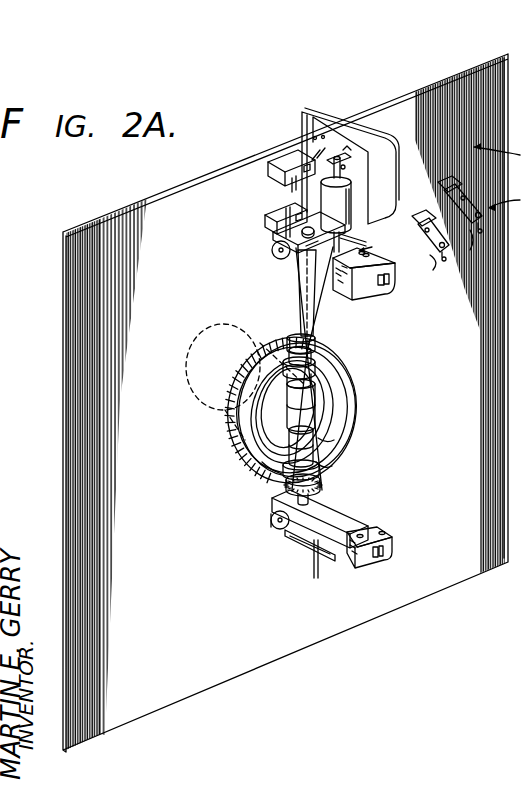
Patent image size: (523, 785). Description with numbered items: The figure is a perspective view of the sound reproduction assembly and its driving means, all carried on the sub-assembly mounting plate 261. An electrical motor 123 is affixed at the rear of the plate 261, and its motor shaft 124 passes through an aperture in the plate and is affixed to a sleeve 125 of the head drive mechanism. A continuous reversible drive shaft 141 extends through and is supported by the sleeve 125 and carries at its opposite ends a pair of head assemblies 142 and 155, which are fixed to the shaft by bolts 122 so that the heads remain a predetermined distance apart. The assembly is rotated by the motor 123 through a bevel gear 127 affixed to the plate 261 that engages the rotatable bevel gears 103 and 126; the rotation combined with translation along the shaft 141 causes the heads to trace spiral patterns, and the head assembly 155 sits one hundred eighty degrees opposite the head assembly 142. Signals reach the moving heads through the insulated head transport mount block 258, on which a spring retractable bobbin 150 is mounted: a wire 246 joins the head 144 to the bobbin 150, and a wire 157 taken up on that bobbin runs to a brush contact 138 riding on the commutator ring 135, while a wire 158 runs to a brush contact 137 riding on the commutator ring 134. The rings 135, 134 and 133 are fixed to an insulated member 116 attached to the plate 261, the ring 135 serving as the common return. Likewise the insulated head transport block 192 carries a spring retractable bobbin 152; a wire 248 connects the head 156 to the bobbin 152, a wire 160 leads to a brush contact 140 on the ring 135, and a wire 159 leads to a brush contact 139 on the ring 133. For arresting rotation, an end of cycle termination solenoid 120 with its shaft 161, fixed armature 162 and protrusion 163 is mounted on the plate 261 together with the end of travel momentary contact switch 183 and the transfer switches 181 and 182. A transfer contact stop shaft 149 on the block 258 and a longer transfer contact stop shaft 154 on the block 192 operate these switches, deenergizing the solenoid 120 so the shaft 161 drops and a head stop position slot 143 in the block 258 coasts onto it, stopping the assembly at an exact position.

The rotatable bevel gear 103 is at (323, 487).
The insulated member 116 is at (345, 367).
The end of cycle termination solenoid 120 is at (352, 197).
The bolts 122 is at (240, 257).
The electrical motor 123 is at (192, 380).
The motor shaft 124 is at (248, 400).
The sleeve 125 is at (270, 448).
The rotatable bevel gear 126 is at (317, 351).
The bevel gear 127 is at (277, 433).
The commutator ring 133 is at (288, 410).
The commutator ring 134 is at (252, 467).
The commutator ring 135 is at (342, 417).
The brush contact 137 is at (330, 393).
The brush contact 138 is at (335, 380).
The brush contact 139 is at (328, 443).
The brush contact 140 is at (285, 482).
The continuous reversible drive shaft 141 is at (312, 332).
The head assembly 142 is at (370, 250).
The head stop position slot 143 is at (312, 246).
The head 144 is at (395, 285).
The transfer contact stop shaft 149 is at (270, 216).
The spring retractable bobbin 150 is at (302, 259).
The spring retractable bobbin 152 is at (272, 520).
The transfer contact stop shaft 154 is at (293, 179).
The head assembly 155 is at (357, 511).
The head 156 is at (392, 543).
The wire 157 is at (297, 312).
The wire 158 is at (330, 308).
The wire 159 is at (330, 466).
The wire 160 is at (275, 498).
The solenoid shaft 161 is at (357, 230).
The armature 162 is at (347, 165).
The protrusion 163 is at (346, 152).
The transfer switch 181 is at (282, 206).
The transfer switch 182 is at (287, 158).
The end of travel momentary contact switch 183 is at (449, 245).
The head transport block 192 is at (313, 542).
The wire 246 is at (305, 236).
The wire 248 is at (297, 537).
The head transport mount block 258 is at (345, 237).
The sub-assembly mounting plate 261 is at (188, 621).